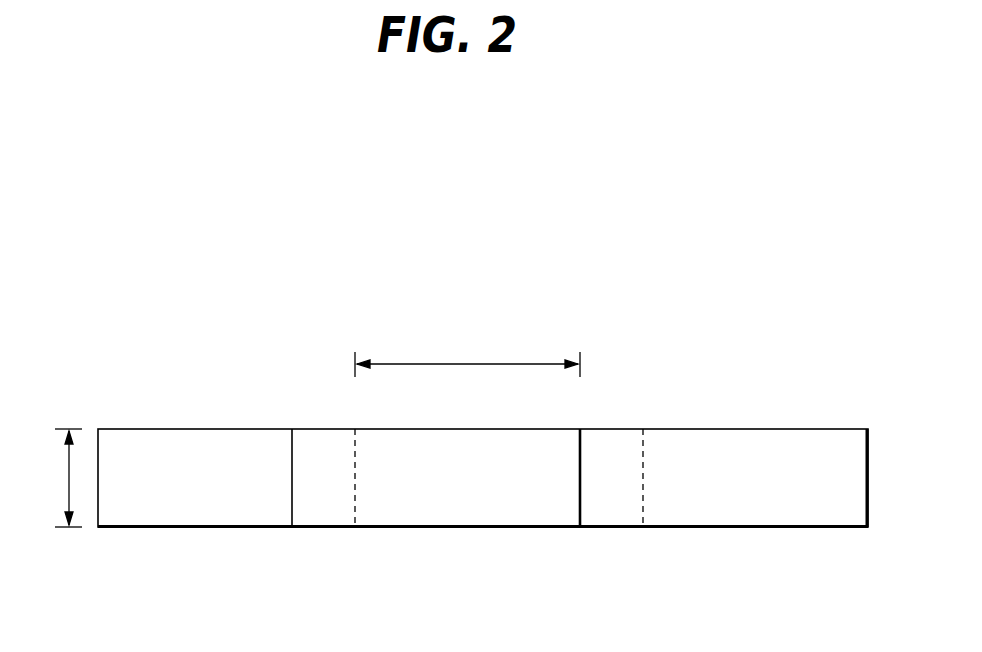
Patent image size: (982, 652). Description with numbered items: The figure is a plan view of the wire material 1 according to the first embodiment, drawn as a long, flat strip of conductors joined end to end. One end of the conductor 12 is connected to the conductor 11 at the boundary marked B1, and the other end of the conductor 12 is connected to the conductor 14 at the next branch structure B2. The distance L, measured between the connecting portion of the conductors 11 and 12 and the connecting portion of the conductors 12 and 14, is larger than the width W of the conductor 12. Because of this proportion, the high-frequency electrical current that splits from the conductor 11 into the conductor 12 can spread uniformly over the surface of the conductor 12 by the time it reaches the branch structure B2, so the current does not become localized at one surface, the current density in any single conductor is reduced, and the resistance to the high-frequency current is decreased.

The wire material 1 is at (461, 190).
The conductor 11 is at (190, 515).
The conductor 12 is at (482, 515).
The conductor 14 is at (812, 513).
The boundary B1 is at (325, 545).
The branch structure B2 is at (603, 545).
The distance L is at (467, 350).
The width W is at (56, 478).